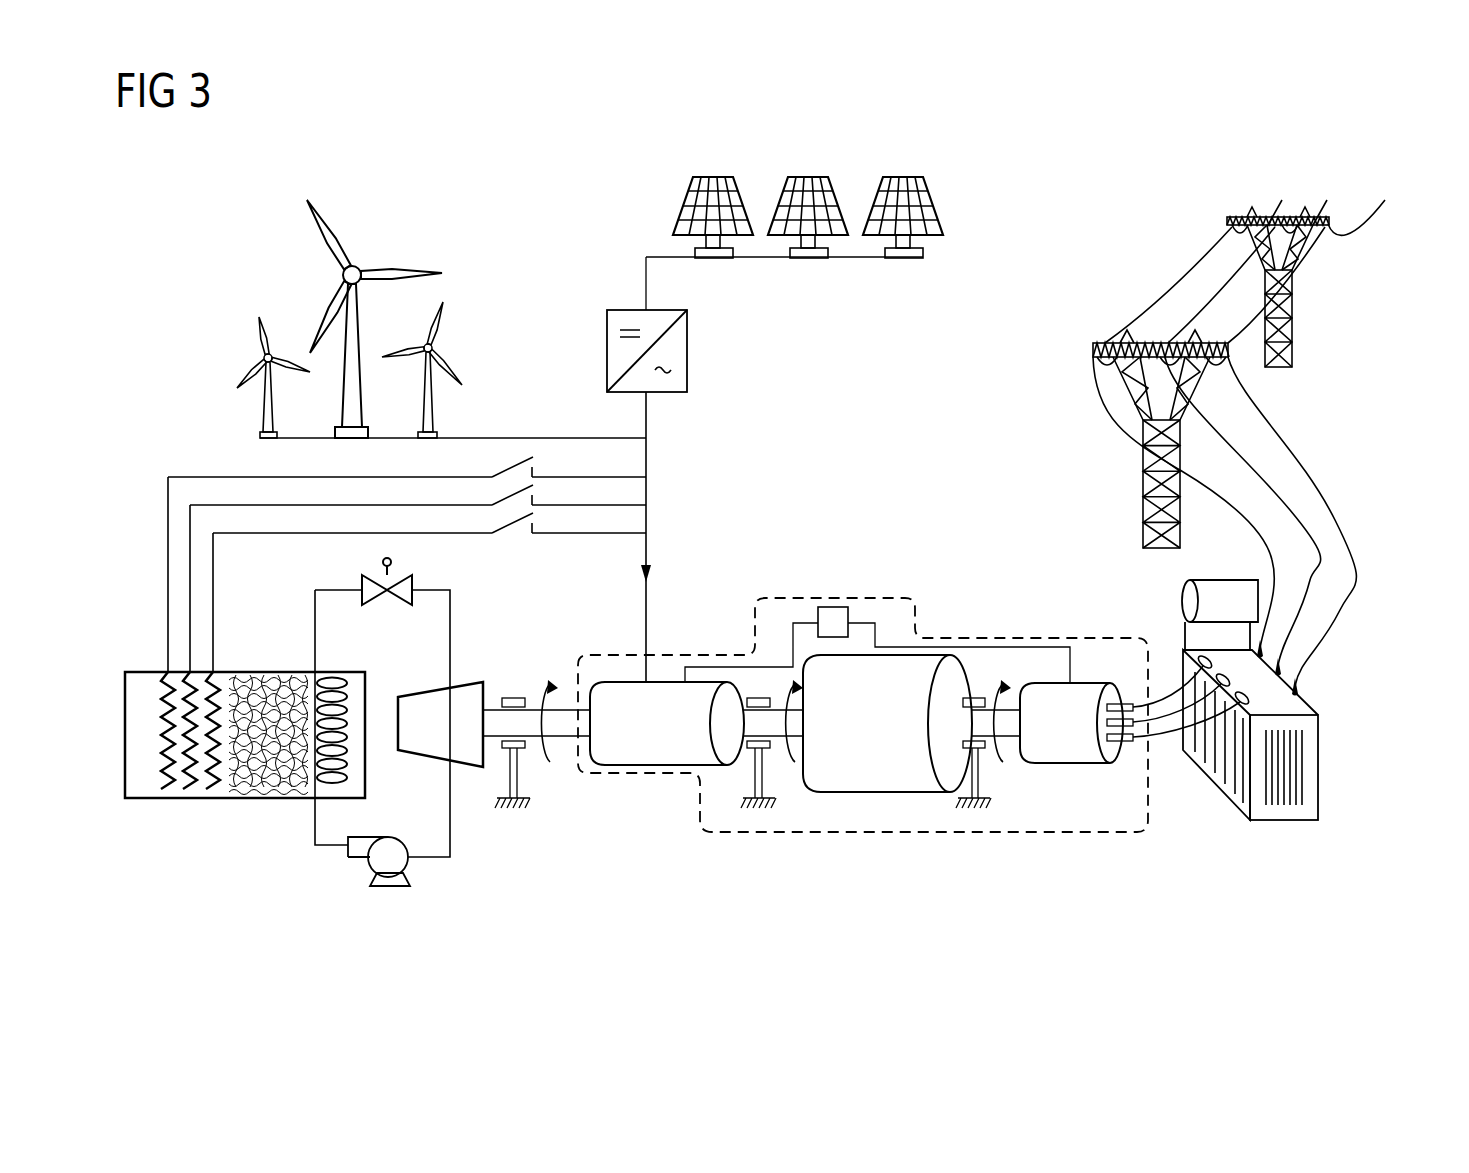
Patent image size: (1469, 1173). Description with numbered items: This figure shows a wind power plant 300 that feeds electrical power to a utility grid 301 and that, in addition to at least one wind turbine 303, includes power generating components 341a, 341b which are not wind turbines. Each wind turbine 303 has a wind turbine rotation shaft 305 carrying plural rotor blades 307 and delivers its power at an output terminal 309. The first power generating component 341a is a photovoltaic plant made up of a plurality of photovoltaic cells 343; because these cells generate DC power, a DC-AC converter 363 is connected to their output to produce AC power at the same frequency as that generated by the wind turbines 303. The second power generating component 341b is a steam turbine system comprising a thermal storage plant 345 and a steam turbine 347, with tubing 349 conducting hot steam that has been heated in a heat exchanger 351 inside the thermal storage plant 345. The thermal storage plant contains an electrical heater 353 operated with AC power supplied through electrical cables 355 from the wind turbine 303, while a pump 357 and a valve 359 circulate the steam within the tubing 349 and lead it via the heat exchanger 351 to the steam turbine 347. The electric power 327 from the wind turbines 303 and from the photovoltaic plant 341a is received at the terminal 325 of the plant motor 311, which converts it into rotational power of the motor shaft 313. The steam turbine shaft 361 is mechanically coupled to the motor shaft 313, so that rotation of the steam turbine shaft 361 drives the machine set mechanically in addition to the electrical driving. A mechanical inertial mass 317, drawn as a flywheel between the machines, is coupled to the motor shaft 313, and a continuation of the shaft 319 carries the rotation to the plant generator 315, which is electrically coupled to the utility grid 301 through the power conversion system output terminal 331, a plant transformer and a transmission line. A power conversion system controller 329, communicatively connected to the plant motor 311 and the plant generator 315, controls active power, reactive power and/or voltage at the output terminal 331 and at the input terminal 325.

The wind power plant 300 is at (1195, 170).
The utility grid 301 is at (1330, 462).
The wind turbine 303 is at (422, 205).
The wind turbine rotation shaft 305 is at (358, 264).
The rotor blades 307 is at (322, 237).
The output terminal 309 is at (372, 426).
The plant motor 311 is at (637, 770).
The motor shaft 313 is at (757, 698).
The plant generator 315 is at (1070, 768).
The mechanical inertial mass 317 is at (880, 795).
The continuation of the plant motor shaft 319 is at (978, 715).
The terminal of the plant motor 325 is at (645, 655).
The electric power 327 is at (652, 584).
The power conversion system controller 329 is at (835, 607).
The power conversion system output terminal 331 is at (1140, 742).
The power generating component 341a is at (830, 300).
The power generating component 341b is at (295, 915).
The photovoltaic cells 343 is at (896, 175).
The thermal storage plant 345 is at (268, 800).
The steam turbine 347 is at (470, 682).
The tubing 349 is at (452, 603).
The heat exchanger 351 is at (333, 680).
The electrical heater 353 is at (155, 672).
The electrical cables 355 is at (192, 475).
The pump 357 is at (412, 862).
The valve 359 is at (362, 583).
The steam turbine shaft 361 is at (560, 712).
The DC-AC converter 363 is at (687, 355).